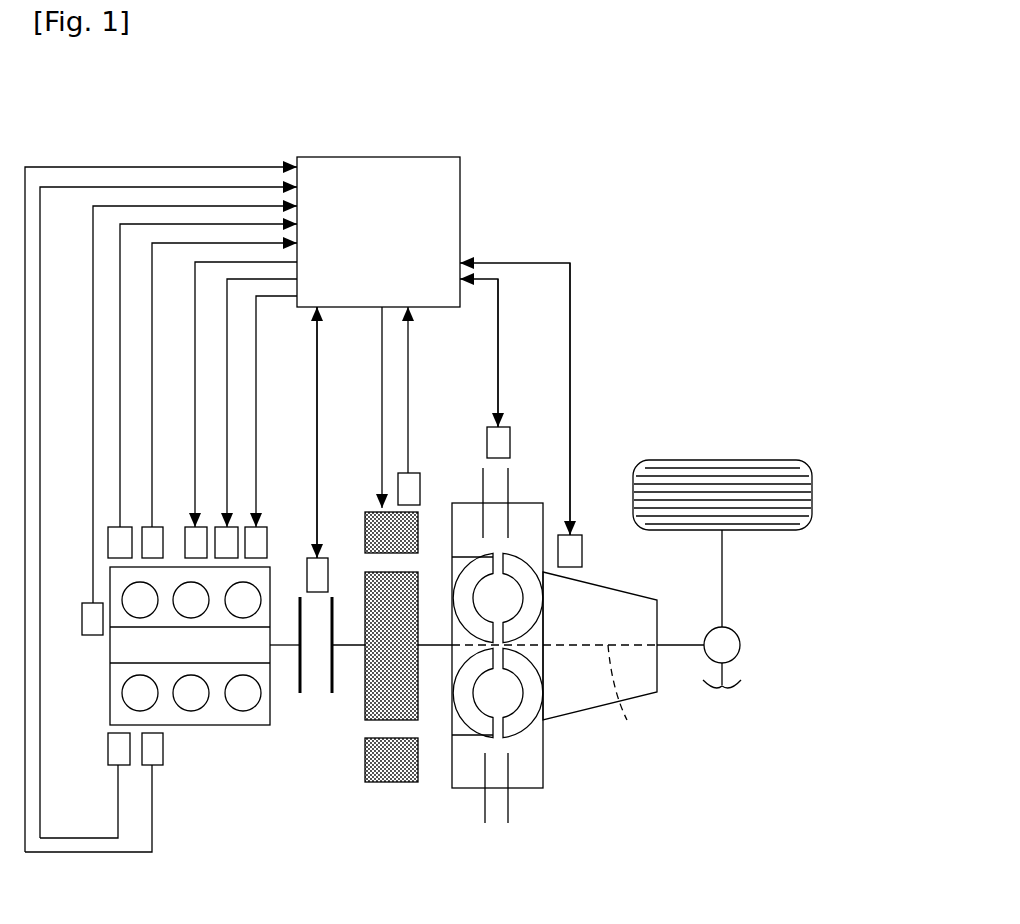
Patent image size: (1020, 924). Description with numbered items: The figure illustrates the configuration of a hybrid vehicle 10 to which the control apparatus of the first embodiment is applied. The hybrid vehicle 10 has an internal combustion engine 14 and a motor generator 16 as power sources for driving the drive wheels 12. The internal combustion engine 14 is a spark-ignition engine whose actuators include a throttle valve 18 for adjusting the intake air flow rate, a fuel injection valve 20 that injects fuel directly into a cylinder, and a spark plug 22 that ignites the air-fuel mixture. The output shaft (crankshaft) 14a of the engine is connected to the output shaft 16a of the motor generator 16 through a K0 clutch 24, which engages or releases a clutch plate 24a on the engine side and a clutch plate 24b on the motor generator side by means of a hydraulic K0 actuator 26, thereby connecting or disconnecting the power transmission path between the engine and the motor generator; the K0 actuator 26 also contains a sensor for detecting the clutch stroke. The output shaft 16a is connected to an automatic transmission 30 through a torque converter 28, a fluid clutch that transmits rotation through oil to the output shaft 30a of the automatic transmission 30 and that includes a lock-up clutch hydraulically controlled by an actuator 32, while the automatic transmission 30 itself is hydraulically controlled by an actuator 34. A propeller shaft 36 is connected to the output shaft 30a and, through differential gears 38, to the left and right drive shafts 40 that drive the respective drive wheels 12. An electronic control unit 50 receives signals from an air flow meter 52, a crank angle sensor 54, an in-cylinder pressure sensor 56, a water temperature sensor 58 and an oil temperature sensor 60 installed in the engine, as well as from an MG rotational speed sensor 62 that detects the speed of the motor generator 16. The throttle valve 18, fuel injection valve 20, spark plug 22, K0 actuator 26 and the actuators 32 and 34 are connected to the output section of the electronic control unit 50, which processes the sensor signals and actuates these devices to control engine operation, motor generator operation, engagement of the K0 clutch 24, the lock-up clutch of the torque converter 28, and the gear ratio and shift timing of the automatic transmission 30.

The hybrid vehicle 10 is at (666, 392).
The drive wheels 12 is at (762, 459).
The internal combustion engine 14 is at (221, 738).
The output shaft (crankshaft) 14a is at (283, 648).
The motor generator (MG) 16 is at (393, 789).
The output shaft of the MG 16a is at (357, 648).
The throttle valve 18 is at (185, 527).
The fuel injection valve 20 is at (238, 527).
The spark plug 22 is at (267, 537).
The K0 clutch 24 is at (311, 723).
The clutch plate 24a is at (300, 693).
The clutch plate 24b is at (332, 693).
The K0 actuator 26 is at (328, 566).
The torque converter 28 is at (530, 789).
The automatic transmission 30 is at (583, 724).
The output shaft of the automatic transmission 30a is at (630, 700).
The actuator 32 is at (510, 430).
The actuator 34 is at (582, 545).
The propeller shaft 36 is at (683, 647).
The differential gears 38 is at (740, 645).
The drive shafts 40 is at (722, 591).
The electronic control unit (ECU) 50 is at (416, 157).
The air flow meter 52 is at (108, 536).
The crank angle sensor 54 is at (82, 606).
The in-cylinder pressure sensor 56 is at (156, 527).
The water temperature sensor 58 is at (113, 767).
The oil temperature sensor 60 is at (153, 767).
The MG rotational speed sensor 62 is at (420, 480).